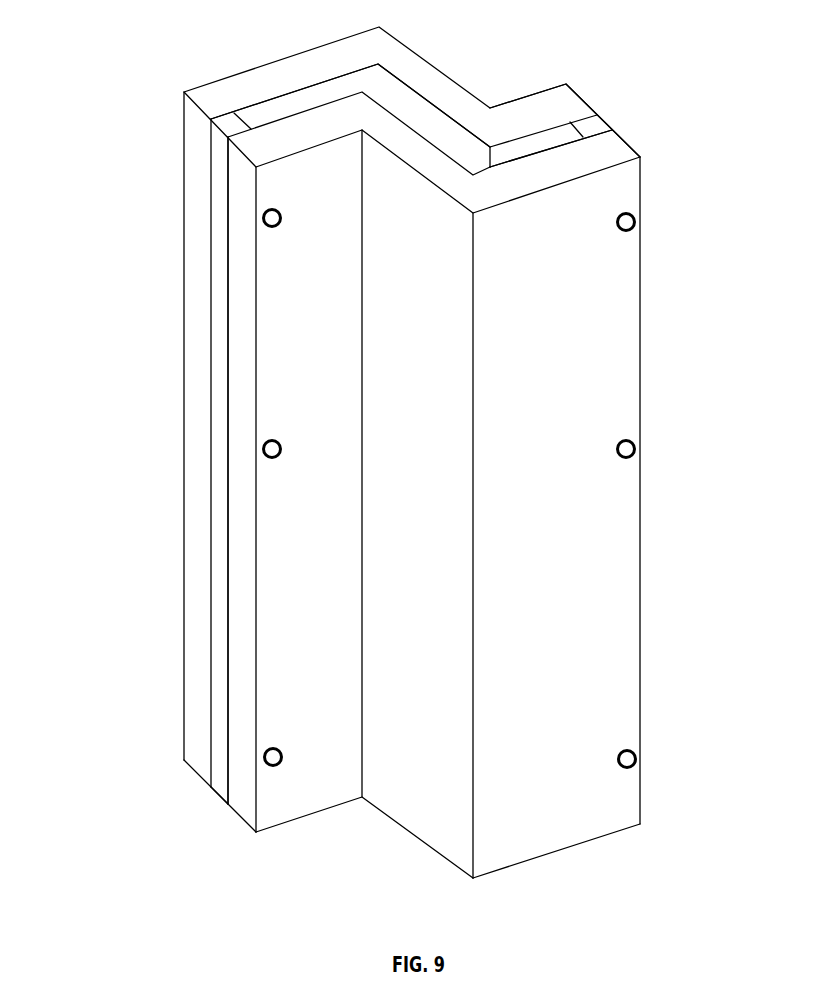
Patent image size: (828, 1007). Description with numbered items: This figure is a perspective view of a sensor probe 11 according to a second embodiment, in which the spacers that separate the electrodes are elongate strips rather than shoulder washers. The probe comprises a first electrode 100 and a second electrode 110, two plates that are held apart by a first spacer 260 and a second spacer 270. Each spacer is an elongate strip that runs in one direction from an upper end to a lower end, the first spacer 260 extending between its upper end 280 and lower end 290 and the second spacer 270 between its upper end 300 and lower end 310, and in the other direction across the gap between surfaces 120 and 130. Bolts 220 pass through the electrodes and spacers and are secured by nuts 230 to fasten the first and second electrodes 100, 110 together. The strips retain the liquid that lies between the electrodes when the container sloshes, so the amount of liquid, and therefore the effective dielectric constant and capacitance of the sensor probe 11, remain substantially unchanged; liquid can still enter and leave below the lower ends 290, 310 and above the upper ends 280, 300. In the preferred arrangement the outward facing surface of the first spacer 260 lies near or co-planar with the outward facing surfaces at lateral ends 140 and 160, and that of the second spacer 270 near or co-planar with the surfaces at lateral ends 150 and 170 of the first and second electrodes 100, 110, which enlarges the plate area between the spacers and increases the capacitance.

The sensor probe 11 is at (92, 208).
The first electrode 100 is at (640, 352).
The second electrode 110 is at (183, 247).
The surface 120 is at (573, 142).
The surface 130 is at (328, 92).
The lateral end 140 is at (640, 795).
The lateral end 150 is at (252, 345).
The lateral end 160 is at (577, 90).
The lateral end 170 is at (195, 325).
The bolt 220 is at (281, 214).
The nut 230 is at (634, 220).
The first spacer 260 is at (598, 125).
The second spacer 270 is at (216, 549).
The upper end 280 is at (303, 130).
The lower end 290 is at (243, 824).
The upper end 300 is at (252, 88).
The lower end 310 is at (197, 775).